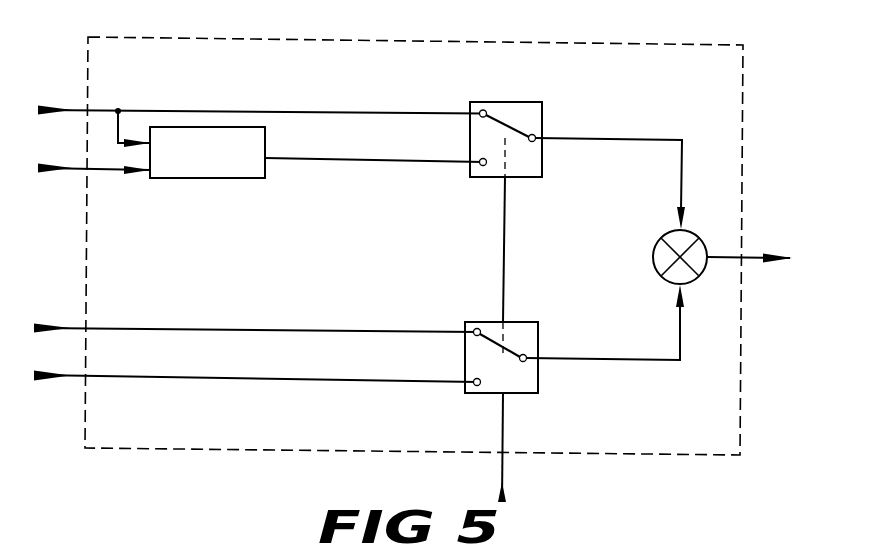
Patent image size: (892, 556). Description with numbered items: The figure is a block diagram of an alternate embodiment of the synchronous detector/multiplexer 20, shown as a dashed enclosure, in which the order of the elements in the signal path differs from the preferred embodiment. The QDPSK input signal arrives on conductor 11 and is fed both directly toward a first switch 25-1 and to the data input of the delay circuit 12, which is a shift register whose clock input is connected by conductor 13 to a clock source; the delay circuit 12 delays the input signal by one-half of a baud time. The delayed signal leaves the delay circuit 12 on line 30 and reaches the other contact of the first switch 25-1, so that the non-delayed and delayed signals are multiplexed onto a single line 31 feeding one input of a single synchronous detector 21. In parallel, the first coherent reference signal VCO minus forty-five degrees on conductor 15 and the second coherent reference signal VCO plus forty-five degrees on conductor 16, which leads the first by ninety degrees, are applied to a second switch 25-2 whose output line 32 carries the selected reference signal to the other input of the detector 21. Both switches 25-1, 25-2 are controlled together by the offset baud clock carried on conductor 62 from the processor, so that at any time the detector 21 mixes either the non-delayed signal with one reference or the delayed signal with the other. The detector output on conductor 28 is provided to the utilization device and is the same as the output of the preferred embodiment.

The synchronous detector/multiplexer 20 is at (180, 37).
The conductor 11 is at (81, 108).
The conductor 13 is at (81, 165).
The delay circuit 12 is at (265, 146).
The delayed signal line 30 is at (370, 158).
The first switch 25-1 is at (527, 100).
The first switch output line 31 is at (587, 137).
The synchronous detector 21 is at (693, 233).
The conductor 28 is at (747, 253).
The conductor 15 is at (74, 325).
The conductor 16 is at (74, 372).
The second switch 25-2 is at (523, 320).
The second switch output line 32 is at (593, 360).
The conductor 62 is at (503, 472).